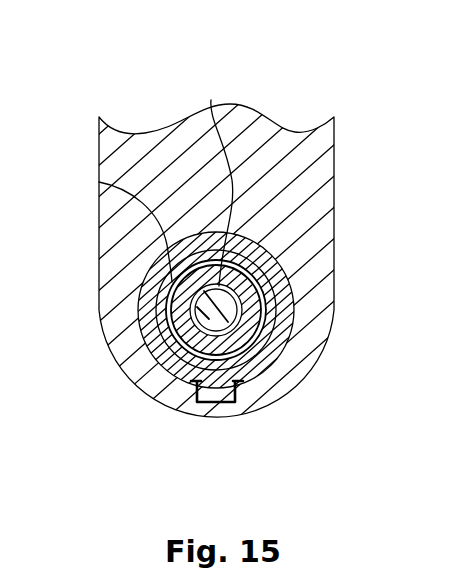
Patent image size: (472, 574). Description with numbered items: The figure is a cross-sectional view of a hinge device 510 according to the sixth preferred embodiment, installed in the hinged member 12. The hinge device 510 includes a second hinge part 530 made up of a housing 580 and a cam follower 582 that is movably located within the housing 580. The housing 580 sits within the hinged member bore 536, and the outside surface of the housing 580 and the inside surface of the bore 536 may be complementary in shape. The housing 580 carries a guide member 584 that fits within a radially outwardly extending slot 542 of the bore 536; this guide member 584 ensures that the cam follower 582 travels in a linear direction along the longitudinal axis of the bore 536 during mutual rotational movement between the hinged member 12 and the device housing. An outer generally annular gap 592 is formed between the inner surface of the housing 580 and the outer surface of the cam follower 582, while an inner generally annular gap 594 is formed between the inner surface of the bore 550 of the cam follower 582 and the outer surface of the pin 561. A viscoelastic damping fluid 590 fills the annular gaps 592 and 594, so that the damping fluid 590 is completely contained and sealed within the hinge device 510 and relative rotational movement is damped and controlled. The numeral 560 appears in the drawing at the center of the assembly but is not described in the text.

The hinge device 510 is at (136, 109).
The viscoelastic damping fluid 590 is at (211, 100).
The hinged member 12 is at (337, 168).
The inner annular gap 594 is at (99, 182).
The second hinge part 530 is at (283, 244).
The hinged member bore 536 is at (142, 284).
The bore of the cam follower 550 is at (255, 288).
The core 560 is at (200, 303).
The cam follower 582 is at (258, 306).
The pin 561 is at (137, 345).
The housing 580 is at (270, 337).
The outer annular gap 592 is at (143, 368).
The guide member 584 is at (193, 390).
The slot 542 is at (222, 401).